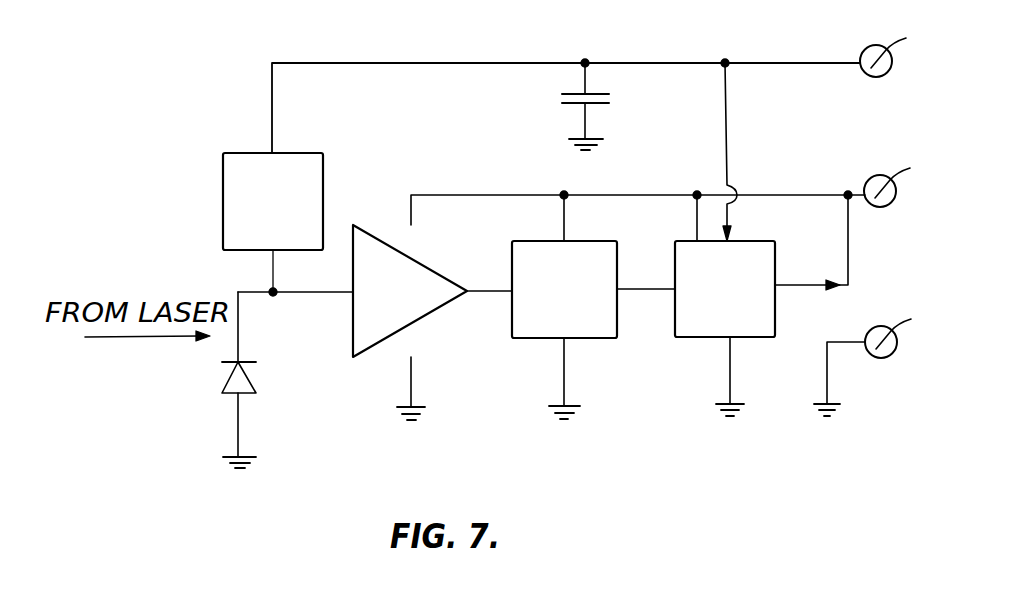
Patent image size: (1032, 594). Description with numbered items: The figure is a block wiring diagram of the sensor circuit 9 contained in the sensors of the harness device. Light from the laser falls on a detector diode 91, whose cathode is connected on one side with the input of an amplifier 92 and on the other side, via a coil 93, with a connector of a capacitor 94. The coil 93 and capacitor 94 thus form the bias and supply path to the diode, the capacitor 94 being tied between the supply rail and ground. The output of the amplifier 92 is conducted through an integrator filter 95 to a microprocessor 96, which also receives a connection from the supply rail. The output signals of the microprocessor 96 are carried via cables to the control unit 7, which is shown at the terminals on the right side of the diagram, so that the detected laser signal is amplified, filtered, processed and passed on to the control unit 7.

The control unit 7 is at (876, 218).
The sensor circuit 9 is at (172, 143).
The detector diode 91 is at (245, 378).
The amplifier 92 is at (372, 313).
The coil 93 is at (243, 207).
The capacitor 94 is at (568, 105).
The integrator filter 95 is at (605, 253).
The microprocessor 96 is at (752, 258).